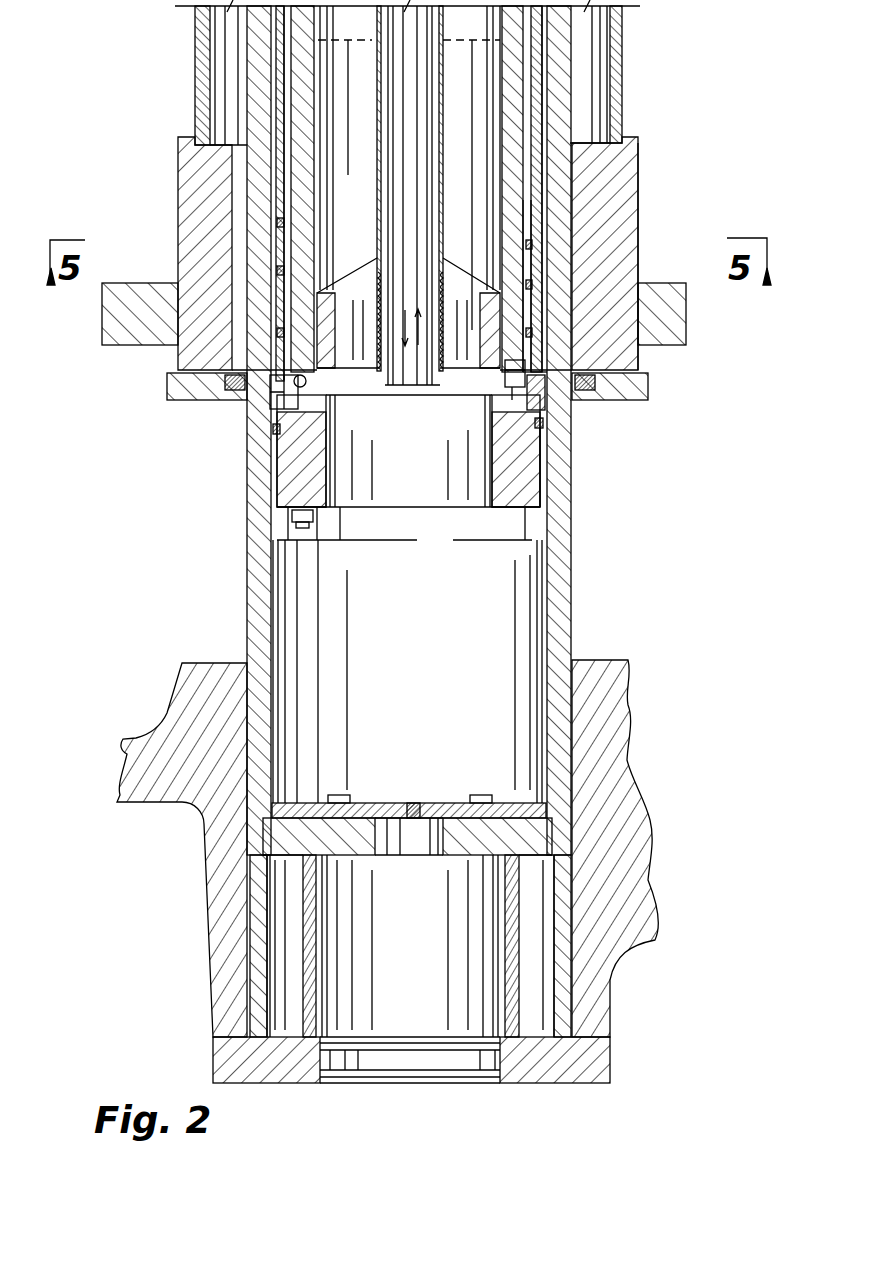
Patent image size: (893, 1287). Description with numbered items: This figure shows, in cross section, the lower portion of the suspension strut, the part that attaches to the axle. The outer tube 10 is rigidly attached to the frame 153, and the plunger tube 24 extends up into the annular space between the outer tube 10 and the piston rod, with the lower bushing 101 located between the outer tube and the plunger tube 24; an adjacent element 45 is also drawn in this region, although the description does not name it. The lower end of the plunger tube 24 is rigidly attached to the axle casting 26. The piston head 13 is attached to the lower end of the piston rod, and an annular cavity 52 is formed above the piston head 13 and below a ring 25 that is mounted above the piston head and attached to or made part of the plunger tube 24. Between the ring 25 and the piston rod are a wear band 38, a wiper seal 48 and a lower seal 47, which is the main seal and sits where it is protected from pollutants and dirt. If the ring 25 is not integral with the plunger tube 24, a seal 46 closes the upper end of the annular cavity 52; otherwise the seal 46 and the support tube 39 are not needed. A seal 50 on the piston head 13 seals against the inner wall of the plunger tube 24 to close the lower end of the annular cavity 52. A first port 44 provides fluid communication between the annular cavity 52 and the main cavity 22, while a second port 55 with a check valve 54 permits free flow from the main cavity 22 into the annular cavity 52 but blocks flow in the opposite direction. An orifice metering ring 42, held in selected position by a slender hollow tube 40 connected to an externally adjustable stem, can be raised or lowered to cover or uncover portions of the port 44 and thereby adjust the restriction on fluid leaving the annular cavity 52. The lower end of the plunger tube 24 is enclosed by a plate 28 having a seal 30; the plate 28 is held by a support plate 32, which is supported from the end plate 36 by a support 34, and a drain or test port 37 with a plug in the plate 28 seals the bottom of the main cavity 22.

The outer tube 10 is at (622, 73).
The piston head 13 is at (512, 482).
The main cavity 22 is at (359, 208).
The plunger tube 24 is at (560, 599).
The ring 25 is at (283, 253).
The axle casting 26 is at (630, 700).
The plate 28 is at (517, 803).
The seal 30 is at (548, 808).
The support plate 32 is at (477, 843).
The support 34 is at (520, 900).
The end plate 36 is at (612, 1053).
The drain or test port 37 is at (414, 802).
The wear band 38 is at (523, 282).
The support tube 39 is at (537, 47).
The slender hollow tube 40 is at (432, 165).
The orifice metering ring 42 is at (330, 322).
The first port 44 is at (511, 377).
The flange body 45 is at (628, 190).
The seal 46 is at (565, 270).
The lower seal 47 is at (533, 372).
The wiper seal 48 is at (526, 243).
The seal 50 is at (542, 427).
The annular cavity 52 is at (545, 397).
The check valve 54 is at (272, 430).
The second passage or port 55 is at (296, 385).
The lower bushing 101 is at (640, 219).
The frame 153 is at (655, 338).